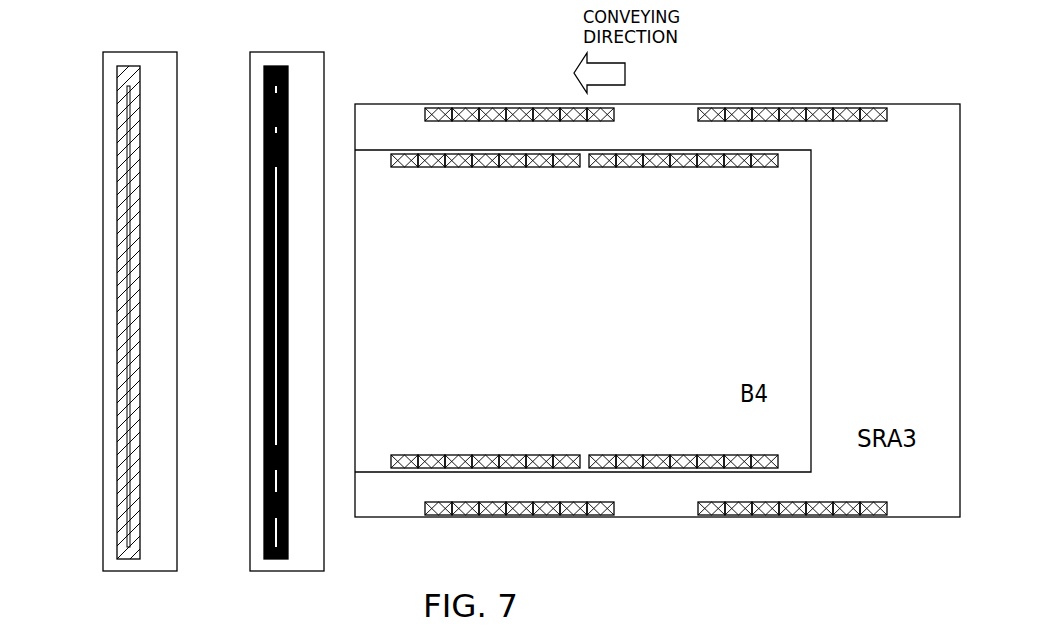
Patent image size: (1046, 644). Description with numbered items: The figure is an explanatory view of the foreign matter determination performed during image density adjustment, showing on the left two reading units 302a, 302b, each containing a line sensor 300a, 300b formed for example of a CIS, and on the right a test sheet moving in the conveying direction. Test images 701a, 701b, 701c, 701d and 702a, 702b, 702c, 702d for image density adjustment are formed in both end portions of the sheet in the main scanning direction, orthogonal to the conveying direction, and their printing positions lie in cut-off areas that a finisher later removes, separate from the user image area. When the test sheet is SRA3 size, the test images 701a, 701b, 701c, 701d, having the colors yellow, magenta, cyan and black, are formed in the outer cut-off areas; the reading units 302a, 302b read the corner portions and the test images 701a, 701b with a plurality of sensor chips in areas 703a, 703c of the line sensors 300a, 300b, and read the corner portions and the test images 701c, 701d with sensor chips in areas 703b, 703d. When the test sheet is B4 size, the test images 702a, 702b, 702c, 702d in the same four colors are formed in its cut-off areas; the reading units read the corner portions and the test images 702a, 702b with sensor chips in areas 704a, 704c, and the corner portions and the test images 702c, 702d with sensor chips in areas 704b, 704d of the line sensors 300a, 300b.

The line sensor 300a is at (278, 65).
The line sensor 300b is at (131, 65).
The reading unit 302a is at (305, 52).
The reading unit 302b is at (158, 52).
The test image 701a is at (437, 107).
The test image 701b is at (709, 107).
The test image 701c is at (437, 516).
The test image 701d is at (710, 516).
The test image 702a is at (399, 168).
The test image 702b is at (594, 168).
The test image 702c is at (417, 439).
The test image 702d is at (615, 439).
The area of line sensor 703a is at (250, 127).
The area of line sensor 703b is at (250, 518).
The area of line sensor 703c is at (103, 127).
The area of line sensor 703d is at (103, 518).
The area of line sensor 704a is at (250, 167).
The area of line sensor 704b is at (250, 470).
The area of line sensor 704c is at (103, 167).
The area of line sensor 704d is at (103, 470).